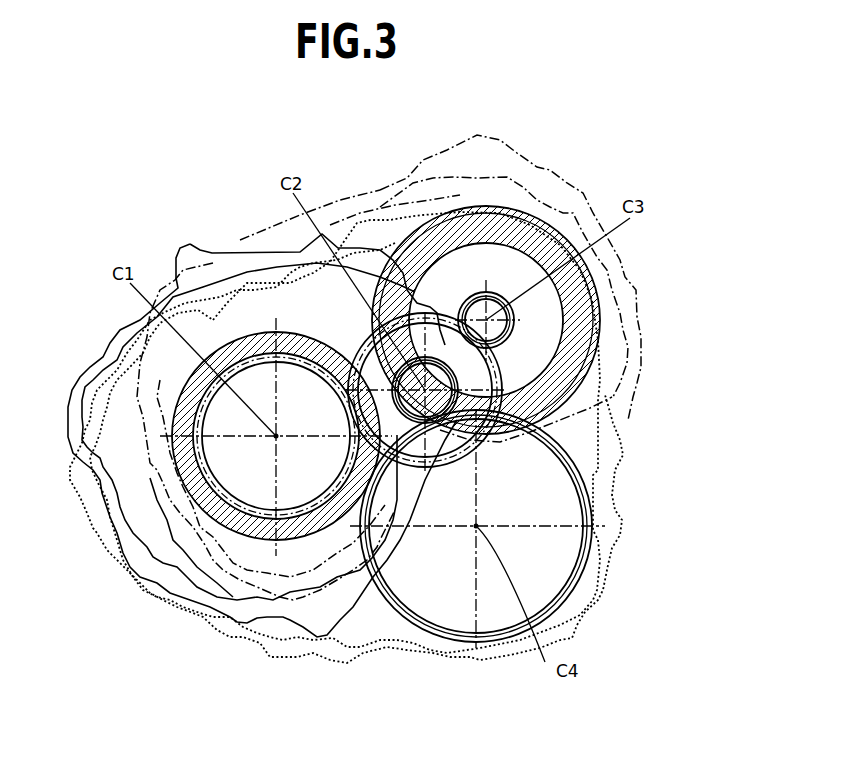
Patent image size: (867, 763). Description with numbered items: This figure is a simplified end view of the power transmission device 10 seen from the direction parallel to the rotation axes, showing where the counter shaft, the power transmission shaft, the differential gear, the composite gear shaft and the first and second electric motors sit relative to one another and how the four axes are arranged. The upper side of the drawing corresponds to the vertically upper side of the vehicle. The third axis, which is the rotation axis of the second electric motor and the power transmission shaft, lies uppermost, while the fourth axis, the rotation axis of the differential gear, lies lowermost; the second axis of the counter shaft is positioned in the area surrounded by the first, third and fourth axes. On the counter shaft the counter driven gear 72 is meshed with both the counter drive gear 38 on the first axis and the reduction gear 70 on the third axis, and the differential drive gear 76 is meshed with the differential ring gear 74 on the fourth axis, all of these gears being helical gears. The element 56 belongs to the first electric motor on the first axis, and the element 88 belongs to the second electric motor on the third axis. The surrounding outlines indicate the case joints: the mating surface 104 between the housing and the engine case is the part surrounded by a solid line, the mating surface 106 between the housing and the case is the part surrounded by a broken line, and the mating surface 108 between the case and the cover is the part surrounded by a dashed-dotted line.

The power transmission device 10 is at (598, 150).
The counter drive gear 38 is at (245, 357).
The first motor generator MG1 56 is at (263, 537).
The reduction gear 70 is at (500, 330).
The counter driven gear 72 is at (450, 313).
The differential ring gear 74 is at (577, 588).
The differential drive gear 76 is at (397, 600).
The second motor generator MG2 rotor 88 is at (488, 207).
The mating surface 104 is at (170, 578).
The mating surface 106 is at (307, 650).
The mating surface 108 is at (173, 510).